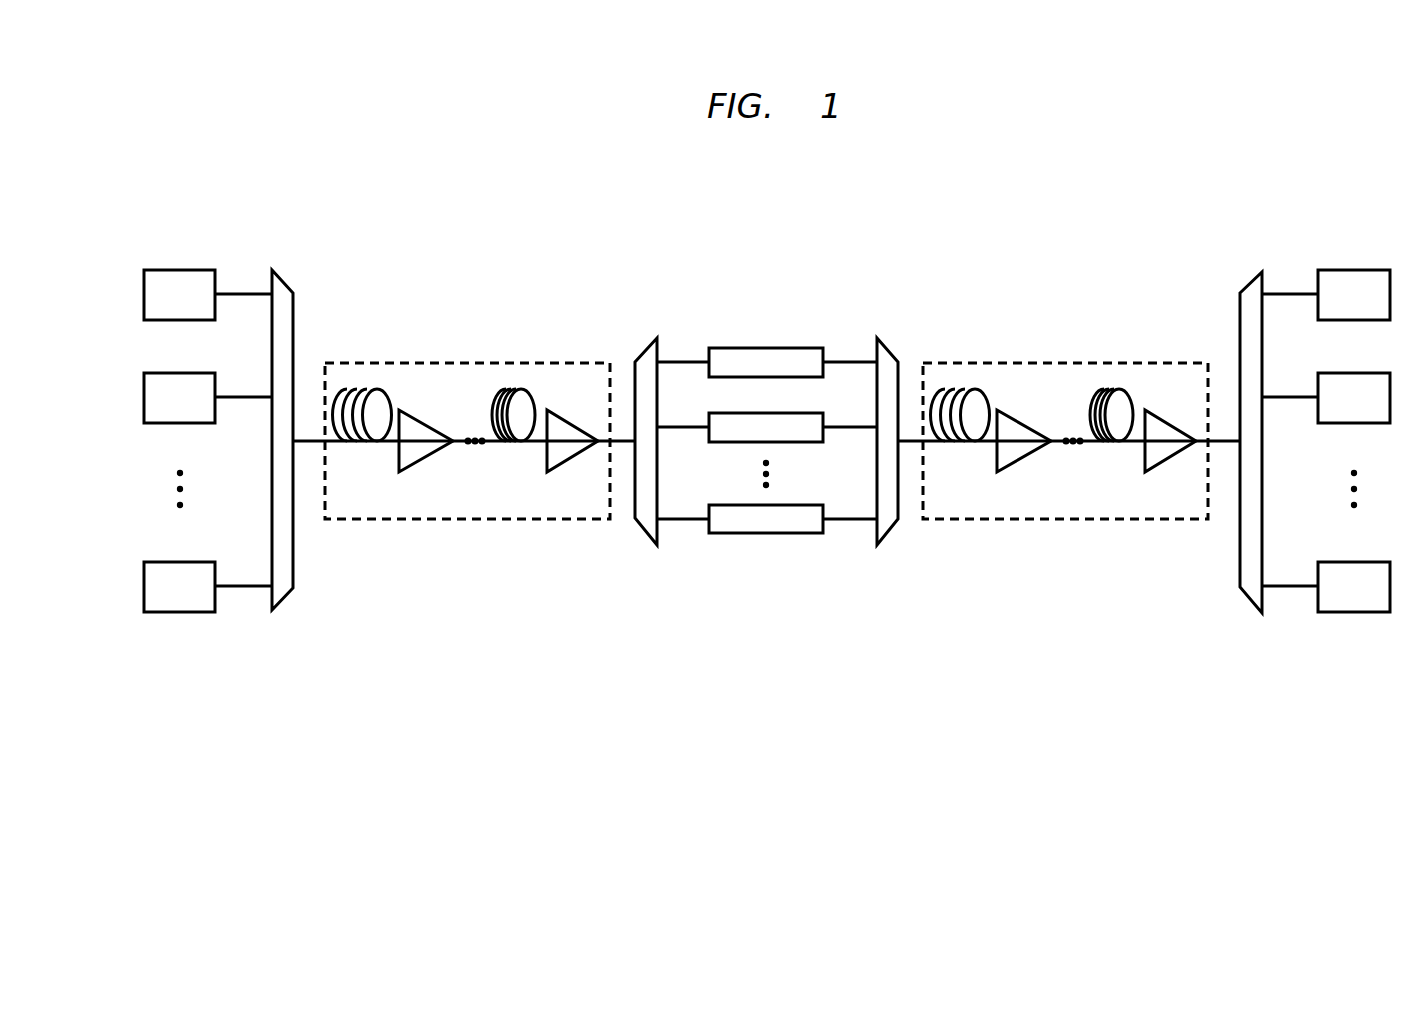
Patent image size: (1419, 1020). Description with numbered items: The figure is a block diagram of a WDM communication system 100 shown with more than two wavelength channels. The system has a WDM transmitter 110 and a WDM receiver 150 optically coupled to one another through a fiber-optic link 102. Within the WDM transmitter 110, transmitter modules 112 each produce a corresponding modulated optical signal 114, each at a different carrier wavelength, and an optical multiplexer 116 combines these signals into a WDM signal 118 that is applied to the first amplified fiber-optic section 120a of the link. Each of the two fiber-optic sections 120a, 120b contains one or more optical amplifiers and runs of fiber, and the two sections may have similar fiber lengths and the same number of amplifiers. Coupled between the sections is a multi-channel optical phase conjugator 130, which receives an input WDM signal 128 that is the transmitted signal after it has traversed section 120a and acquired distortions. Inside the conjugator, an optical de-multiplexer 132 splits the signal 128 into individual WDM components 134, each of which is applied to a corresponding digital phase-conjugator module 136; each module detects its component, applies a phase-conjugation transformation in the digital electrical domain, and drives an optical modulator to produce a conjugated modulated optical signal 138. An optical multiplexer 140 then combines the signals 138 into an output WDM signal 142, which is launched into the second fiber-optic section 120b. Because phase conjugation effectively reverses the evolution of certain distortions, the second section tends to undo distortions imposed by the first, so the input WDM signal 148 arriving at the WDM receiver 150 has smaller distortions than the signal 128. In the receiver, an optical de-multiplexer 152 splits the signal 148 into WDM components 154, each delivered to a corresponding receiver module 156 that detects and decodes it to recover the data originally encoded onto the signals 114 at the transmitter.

The WDM communication system 100 is at (786, 156).
The fiber-optic link 102 is at (851, 247).
The WDM transmitter 110 is at (242, 454).
The transmitter modules 112 is at (202, 422).
The modulated optical signals 114 is at (245, 420).
The optical multiplexer 116 is at (287, 282).
The WDM signal 118 is at (308, 444).
The fiber-optic section 120a is at (455, 363).
The fiber-optic section 120b is at (1060, 363).
The input WDM signal 128 is at (620, 444).
The multi-channel optical phase conjugator 130 is at (770, 479).
The optical de-multiplexer 132 is at (646, 350).
The WDM components 134 is at (682, 359).
The digital phase-conjugator modules 136 is at (752, 348).
The modulated optical signals 138 is at (847, 359).
The optical multiplexer 140 is at (887, 350).
The output WDM signal 142 is at (919, 508).
The input WDM signal 148 is at (1221, 444).
The WDM receiver 150 is at (1302, 456).
The optical de-multiplexer 152 is at (1248, 286).
The WDM components 154 is at (1294, 293).
The receiver modules 156 is at (1338, 424).